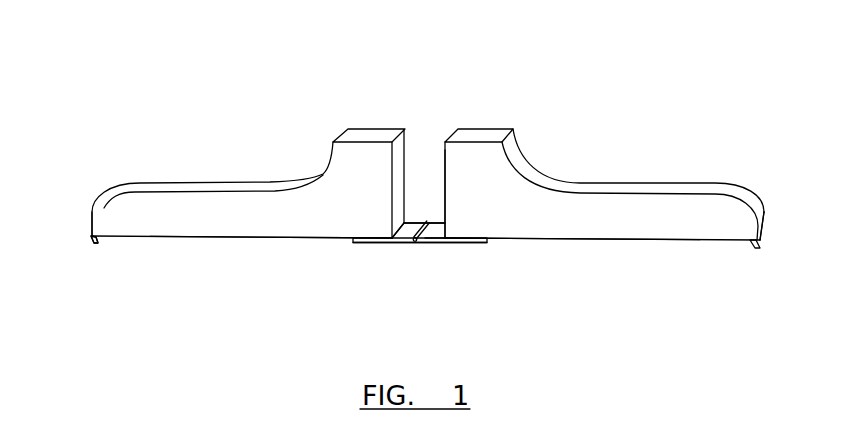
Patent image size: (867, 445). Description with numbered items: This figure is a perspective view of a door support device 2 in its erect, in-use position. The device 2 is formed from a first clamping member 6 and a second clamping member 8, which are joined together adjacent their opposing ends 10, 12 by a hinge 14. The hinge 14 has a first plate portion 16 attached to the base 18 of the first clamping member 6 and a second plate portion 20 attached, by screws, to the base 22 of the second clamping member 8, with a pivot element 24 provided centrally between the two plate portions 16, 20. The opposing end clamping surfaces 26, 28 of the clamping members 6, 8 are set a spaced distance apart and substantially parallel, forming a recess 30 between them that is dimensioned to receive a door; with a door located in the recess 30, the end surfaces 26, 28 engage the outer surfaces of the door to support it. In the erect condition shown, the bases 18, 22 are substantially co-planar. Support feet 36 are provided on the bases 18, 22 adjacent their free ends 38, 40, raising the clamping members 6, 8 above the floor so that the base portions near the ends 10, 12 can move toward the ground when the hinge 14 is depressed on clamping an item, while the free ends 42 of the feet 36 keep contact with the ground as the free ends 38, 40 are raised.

The door support device 2 is at (454, 42).
The first clamping member 6 is at (365, 135).
The second clamping member 8 is at (482, 135).
The end of first clamping member 10 is at (387, 246).
The end of second clamping member 12 is at (452, 247).
The hinge 14 is at (417, 249).
The first plate portion 16 is at (405, 231).
The base of first clamping member 18 is at (305, 238).
The second plate portion 20 is at (439, 231).
The base of second clamping member 22 is at (596, 241).
The pivot element 24 is at (429, 222).
The end clamping surface of first clamping member 26 is at (404, 146).
The end clamping surface of second clamping member 28 is at (446, 150).
The recess 30 is at (425, 137).
The support feet 36 is at (97, 243).
The free end of first clamping member 38 is at (92, 223).
The free end of second clamping member 40 is at (762, 220).
The free ends of feet 42 is at (93, 241).